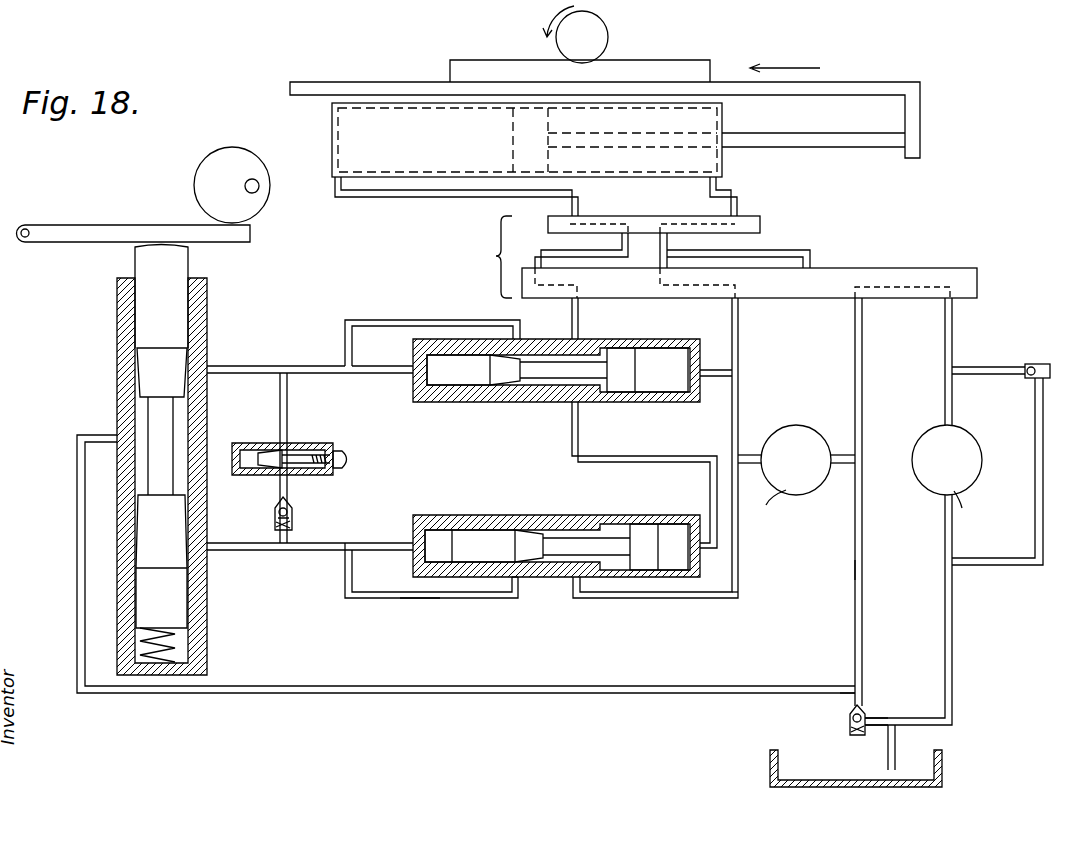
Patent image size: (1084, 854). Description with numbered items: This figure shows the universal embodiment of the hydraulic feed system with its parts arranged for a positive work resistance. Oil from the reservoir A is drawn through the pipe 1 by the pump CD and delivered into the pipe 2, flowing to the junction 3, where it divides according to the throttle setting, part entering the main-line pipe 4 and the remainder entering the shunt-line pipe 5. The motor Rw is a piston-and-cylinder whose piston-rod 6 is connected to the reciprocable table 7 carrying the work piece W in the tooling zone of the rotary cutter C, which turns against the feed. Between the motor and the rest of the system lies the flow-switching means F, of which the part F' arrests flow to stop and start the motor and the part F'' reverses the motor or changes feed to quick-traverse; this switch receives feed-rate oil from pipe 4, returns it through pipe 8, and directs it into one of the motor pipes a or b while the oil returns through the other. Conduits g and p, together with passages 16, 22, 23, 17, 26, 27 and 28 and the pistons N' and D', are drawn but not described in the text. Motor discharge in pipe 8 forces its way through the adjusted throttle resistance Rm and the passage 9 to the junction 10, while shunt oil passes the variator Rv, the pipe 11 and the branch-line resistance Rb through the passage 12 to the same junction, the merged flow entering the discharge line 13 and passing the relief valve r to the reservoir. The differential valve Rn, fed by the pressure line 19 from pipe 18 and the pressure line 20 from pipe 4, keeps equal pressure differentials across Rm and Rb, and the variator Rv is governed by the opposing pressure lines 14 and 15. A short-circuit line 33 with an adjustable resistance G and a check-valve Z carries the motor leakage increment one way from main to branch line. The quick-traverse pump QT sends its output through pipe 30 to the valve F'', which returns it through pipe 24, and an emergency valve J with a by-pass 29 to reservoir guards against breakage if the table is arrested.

The reciprocable table 7 is at (300, 82).
The work piece W is at (700, 60).
The rotary cutter C is at (575, 34).
The motor Rw is at (332, 140).
The piston-rod 6 is at (870, 150).
The motor pipe a is at (428, 197).
The motor pipe b is at (742, 197).
The stop-start valve part F' is at (676, 218).
The flow-switching means F is at (487, 257).
The conduit g is at (620, 244).
The conduit p is at (668, 244).
The reversing and rate-change valve part F'' is at (772, 277).
The pipe 8 is at (580, 320).
The main-line pipe 4 is at (740, 396).
The shunt-line pipe 5 is at (740, 532).
The pressure line 20 is at (722, 360).
The pressure line 14 is at (656, 456).
The differential valve Rn is at (556, 370).
The piston N' is at (647, 370).
The pipe 18 is at (328, 372).
The pressure line 19 is at (396, 375).
The throttle passage 9 is at (200, 374).
The short-circuit line 33 is at (288, 418).
The adjustable resistance G is at (342, 449).
The check-valve Z is at (293, 510).
The passage 12 is at (190, 520).
The pressure line 15 is at (370, 565).
The pipe 11 is at (432, 600).
The port 16 is at (520, 580).
The variator Rv is at (556, 546).
The piston D' is at (659, 547).
The junction 10 is at (117, 435).
The throttle resistance Rm is at (162, 372).
The branch-line resistance Rb is at (161, 578).
The discharge line 13 is at (77, 508).
The conduit 23 is at (855, 684).
The pump CD is at (796, 471).
The pipe 2 is at (749, 441).
The junction 3 is at (740, 470).
The pipe 1 is at (843, 440).
The conduit 22 is at (862, 458).
The pipe 24 is at (863, 382).
The conduit 17 is at (863, 570).
The quick-traverse pump QT is at (954, 471).
The pipe 30 is at (953, 325).
The conduit 26 is at (953, 650).
The emergency valve J is at (1042, 364).
The by-pass 29 is at (1044, 452).
The relief valve r is at (850, 717).
The conduit 27 is at (878, 730).
The drain pipe 28 is at (896, 742).
The reservoir A is at (770, 770).